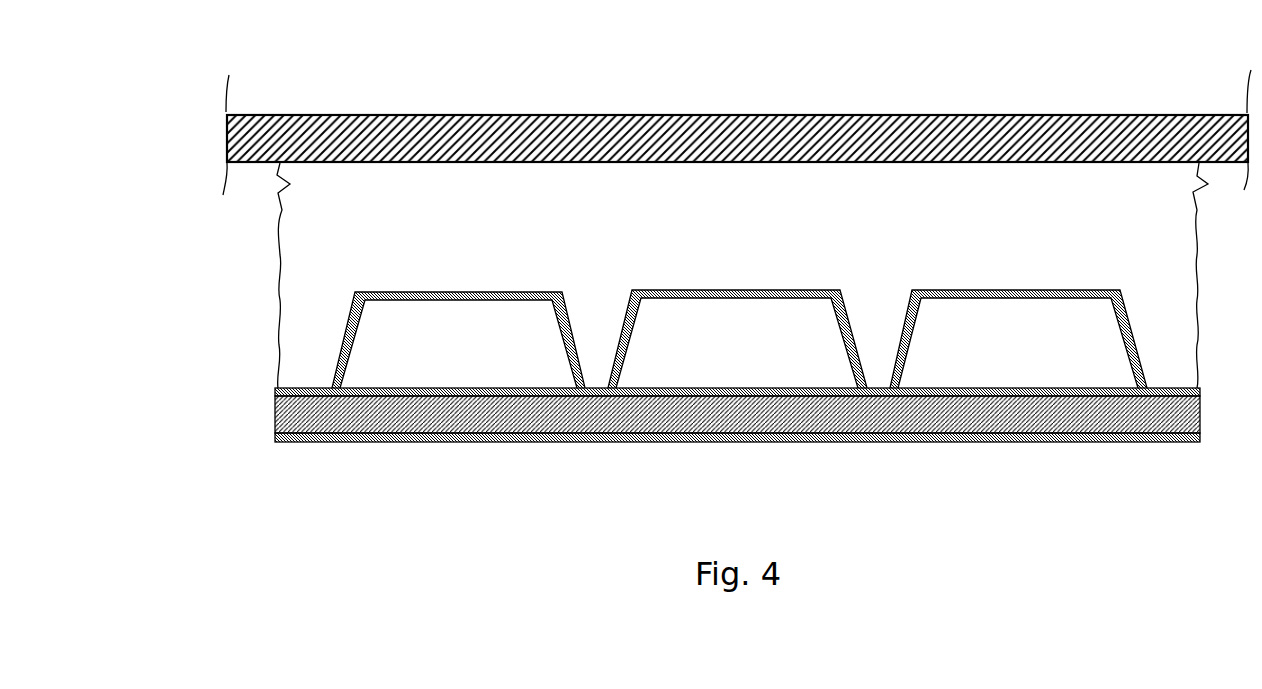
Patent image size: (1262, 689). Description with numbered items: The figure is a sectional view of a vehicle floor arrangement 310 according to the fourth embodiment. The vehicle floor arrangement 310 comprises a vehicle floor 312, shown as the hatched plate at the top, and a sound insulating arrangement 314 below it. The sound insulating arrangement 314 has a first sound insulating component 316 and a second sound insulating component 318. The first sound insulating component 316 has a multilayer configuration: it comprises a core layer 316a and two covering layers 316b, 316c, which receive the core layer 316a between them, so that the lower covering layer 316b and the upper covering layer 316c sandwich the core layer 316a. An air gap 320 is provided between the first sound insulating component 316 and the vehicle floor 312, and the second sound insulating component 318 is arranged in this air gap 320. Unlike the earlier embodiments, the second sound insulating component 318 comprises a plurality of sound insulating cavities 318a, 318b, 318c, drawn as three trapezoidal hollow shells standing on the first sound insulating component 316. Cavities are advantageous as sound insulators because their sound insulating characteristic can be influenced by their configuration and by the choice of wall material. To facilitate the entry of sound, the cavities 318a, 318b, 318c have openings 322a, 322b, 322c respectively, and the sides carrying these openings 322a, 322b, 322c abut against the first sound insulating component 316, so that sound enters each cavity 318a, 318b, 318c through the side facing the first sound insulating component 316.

The vehicle floor arrangement 310 is at (256, 40).
The vehicle floor 312 is at (349, 116).
The sound insulating arrangement 314 is at (207, 222).
The first sound insulating component 316 is at (364, 456).
The core layer 316a is at (277, 409).
The covering layer 316b is at (270, 446).
The covering layer 316c is at (276, 389).
The second sound insulating component 318 is at (320, 342).
The sound insulating cavity 318a is at (516, 290).
The sound insulating cavity 318b is at (820, 290).
The sound insulating cavity 318c is at (1093, 290).
The air gap 320 is at (298, 255).
The opening 322a is at (458, 384).
The opening 322b is at (763, 385).
The opening 322c is at (1037, 384).